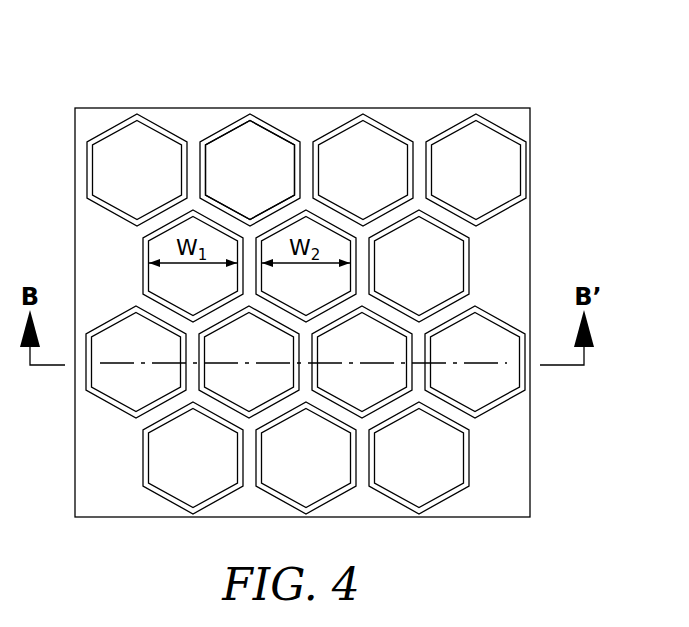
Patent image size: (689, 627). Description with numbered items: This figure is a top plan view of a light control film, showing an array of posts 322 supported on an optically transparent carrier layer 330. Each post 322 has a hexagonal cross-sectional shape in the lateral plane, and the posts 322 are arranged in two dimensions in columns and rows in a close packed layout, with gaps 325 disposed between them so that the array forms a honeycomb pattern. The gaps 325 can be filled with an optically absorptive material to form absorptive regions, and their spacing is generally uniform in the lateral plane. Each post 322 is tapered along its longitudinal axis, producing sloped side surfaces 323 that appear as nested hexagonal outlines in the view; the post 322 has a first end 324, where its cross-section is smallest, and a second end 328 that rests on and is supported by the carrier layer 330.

The post 322 is at (455, 125).
The sloped side surface 323 is at (225, 132).
The first end 324 is at (267, 152).
The gap 325 is at (462, 227).
The second end 328 is at (263, 122).
The optically transparent carrier layer 330 is at (518, 512).